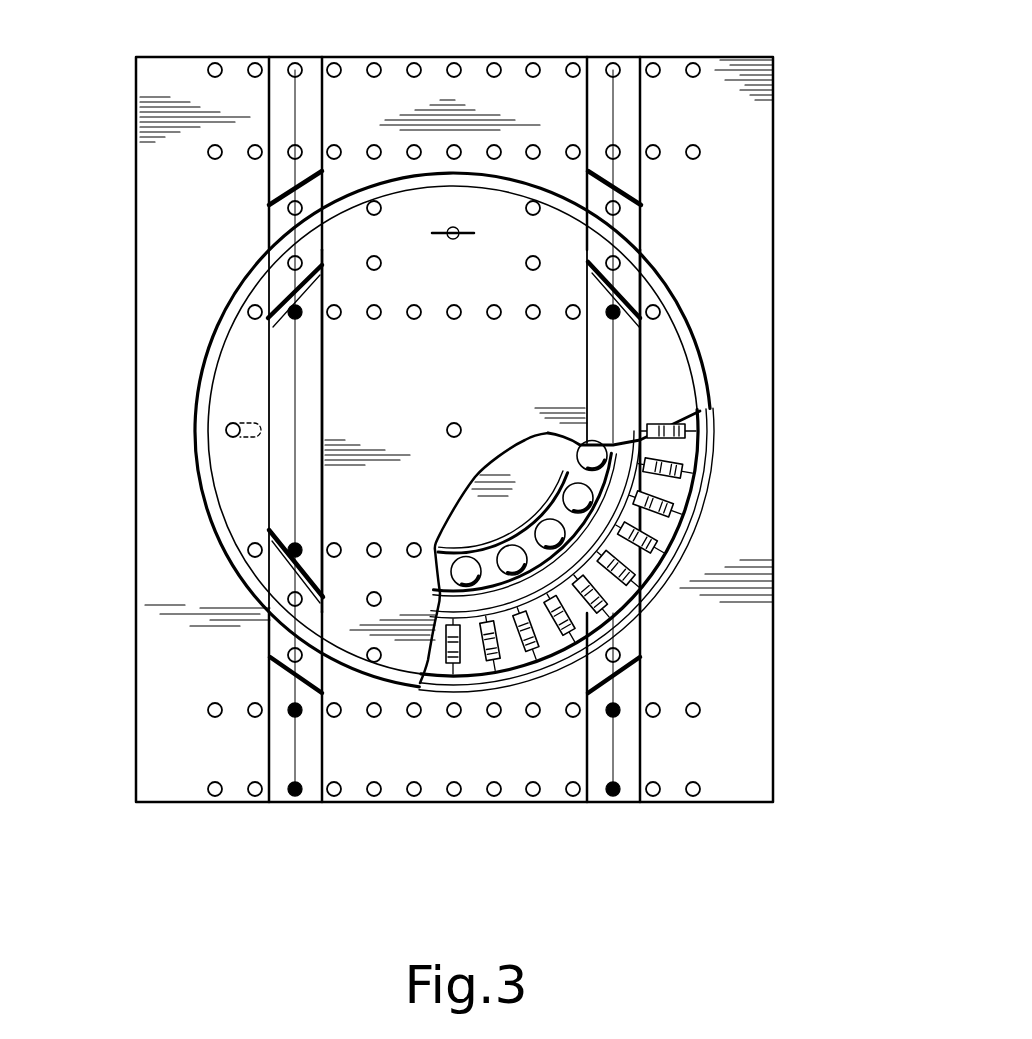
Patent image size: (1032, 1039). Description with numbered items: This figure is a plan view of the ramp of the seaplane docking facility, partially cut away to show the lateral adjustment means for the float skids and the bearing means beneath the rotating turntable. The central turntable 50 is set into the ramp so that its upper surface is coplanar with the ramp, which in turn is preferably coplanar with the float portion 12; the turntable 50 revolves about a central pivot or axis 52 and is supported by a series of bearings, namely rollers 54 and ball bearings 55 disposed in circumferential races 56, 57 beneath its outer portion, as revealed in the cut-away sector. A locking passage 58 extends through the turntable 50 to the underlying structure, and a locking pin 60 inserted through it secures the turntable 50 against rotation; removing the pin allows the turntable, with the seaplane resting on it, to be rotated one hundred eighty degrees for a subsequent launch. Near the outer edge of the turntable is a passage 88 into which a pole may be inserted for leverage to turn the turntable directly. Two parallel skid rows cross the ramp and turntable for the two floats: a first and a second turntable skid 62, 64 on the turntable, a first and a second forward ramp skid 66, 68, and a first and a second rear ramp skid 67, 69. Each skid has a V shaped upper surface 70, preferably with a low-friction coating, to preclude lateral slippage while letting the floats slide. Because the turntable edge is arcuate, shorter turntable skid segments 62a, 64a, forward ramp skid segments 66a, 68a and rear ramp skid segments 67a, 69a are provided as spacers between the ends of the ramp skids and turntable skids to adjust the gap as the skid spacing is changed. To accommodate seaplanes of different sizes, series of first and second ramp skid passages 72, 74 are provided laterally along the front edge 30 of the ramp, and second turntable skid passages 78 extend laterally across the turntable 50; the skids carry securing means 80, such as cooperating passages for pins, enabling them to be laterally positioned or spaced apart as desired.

The float portion 12 is at (775, 352).
The front edge 30 is at (775, 710).
The central turntable 50 is at (362, 412).
The central pivot or axis 52 is at (460, 422).
The rollers 54 is at (690, 478).
The ball bearings 55 is at (556, 470).
The race 56 is at (707, 513).
The race 57 is at (526, 545).
The locking passage 58 is at (445, 236).
The locking pin 60 is at (466, 236).
The first turntable skid 62 is at (268, 475).
The turntable skid segment 62a is at (322, 242).
The second turntable skid 64 is at (618, 400).
The turntable skid segment 64a is at (608, 280).
The first forward ramp skid 66 is at (270, 744).
The forward ramp skid segment 66a is at (280, 642).
The first rear ramp skid 67 is at (268, 115).
The rear ramp skid segment 67a is at (268, 227).
The second forward ramp skid 68 is at (630, 750).
The forward ramp skid segment 68a is at (632, 637).
The second rear ramp skid 69 is at (641, 115).
The rear ramp skid segment 69a is at (642, 226).
The V shaped upper surface 70 is at (597, 127).
The first ramp skid passages 72 is at (490, 716).
The second ramp skid passages 74 is at (496, 782).
The second turntable skid passages 78 is at (413, 540).
The securing means 80 is at (590, 316).
The passage 88 is at (228, 426).